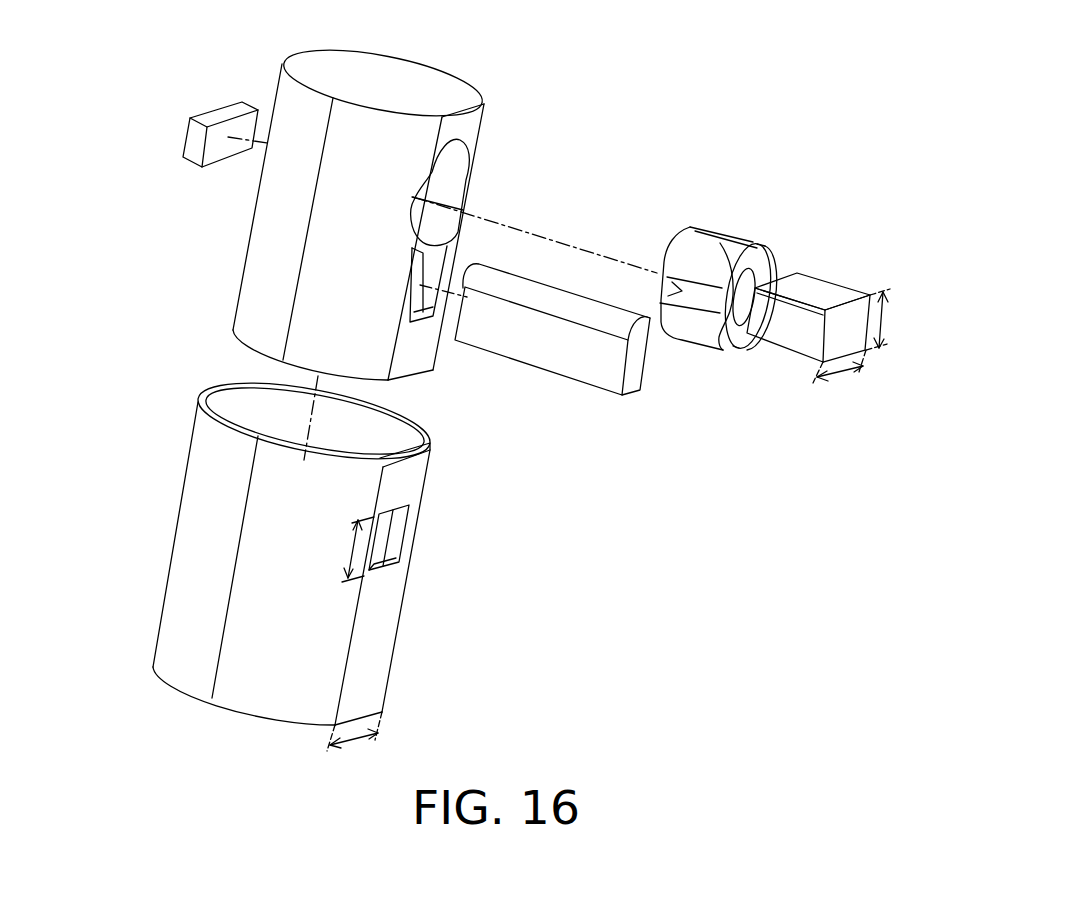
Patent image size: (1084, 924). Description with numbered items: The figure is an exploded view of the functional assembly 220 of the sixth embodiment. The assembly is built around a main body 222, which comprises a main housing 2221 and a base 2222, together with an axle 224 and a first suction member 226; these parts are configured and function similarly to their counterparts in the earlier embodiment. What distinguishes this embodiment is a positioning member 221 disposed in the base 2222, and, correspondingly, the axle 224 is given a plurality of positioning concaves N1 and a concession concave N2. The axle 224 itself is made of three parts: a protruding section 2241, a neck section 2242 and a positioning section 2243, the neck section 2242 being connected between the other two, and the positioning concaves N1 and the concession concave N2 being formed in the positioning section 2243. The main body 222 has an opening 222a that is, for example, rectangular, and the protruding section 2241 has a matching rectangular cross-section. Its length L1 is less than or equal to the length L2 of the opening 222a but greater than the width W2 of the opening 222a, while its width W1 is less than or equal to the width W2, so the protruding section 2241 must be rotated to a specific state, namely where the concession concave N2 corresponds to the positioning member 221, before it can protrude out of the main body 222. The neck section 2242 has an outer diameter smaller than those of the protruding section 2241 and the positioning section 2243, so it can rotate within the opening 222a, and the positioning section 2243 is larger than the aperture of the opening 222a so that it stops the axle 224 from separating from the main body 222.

The functional assembly 220 is at (147, 699).
The positioning member 221 is at (543, 342).
The main body 222 is at (130, 186).
The main housing 2221 is at (207, 507).
The base 2222 is at (283, 213).
The opening 222a is at (422, 531).
The axle 224 is at (882, 85).
The protruding section 2241 is at (820, 290).
The neck section 2242 is at (748, 297).
The positioning section 2243 is at (718, 255).
The first suction member 226 is at (236, 123).
The positioning concave N1 is at (668, 291).
The concession concave N2 is at (739, 352).
The width of the protruding section W1 is at (896, 319).
The length of the protruding section L1 is at (839, 384).
The width of the opening W2 is at (340, 549).
The length of the opening L2 is at (354, 748).